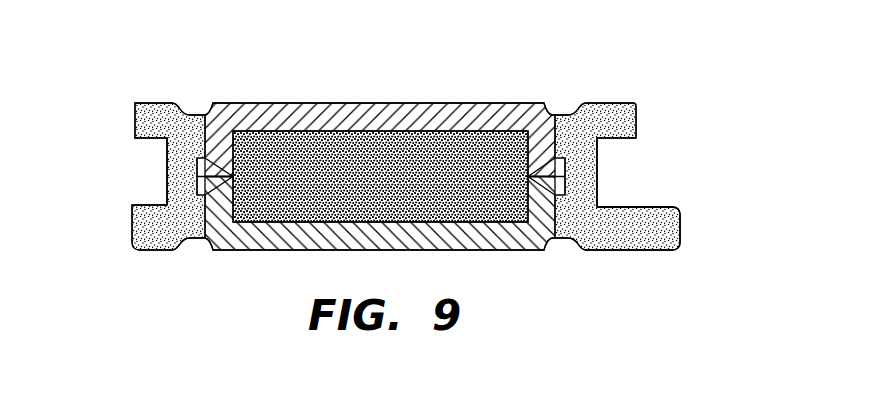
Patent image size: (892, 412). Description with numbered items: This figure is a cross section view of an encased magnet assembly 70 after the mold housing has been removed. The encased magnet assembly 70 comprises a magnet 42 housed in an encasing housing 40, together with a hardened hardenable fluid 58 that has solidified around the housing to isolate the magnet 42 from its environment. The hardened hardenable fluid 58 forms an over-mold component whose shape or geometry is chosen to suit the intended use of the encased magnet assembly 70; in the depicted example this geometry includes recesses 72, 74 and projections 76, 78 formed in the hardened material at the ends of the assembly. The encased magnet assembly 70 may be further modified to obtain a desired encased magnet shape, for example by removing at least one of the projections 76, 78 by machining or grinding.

The encased magnet assembly 70 is at (108, 183).
The projection 76 is at (135, 118).
The recess 72 is at (165, 173).
The hardenable fluid 58 is at (623, 120).
The recess 74 is at (597, 173).
The projection 78 is at (665, 232).
The encasing housing 40 is at (273, 115).
The magnet 42 is at (380, 167).